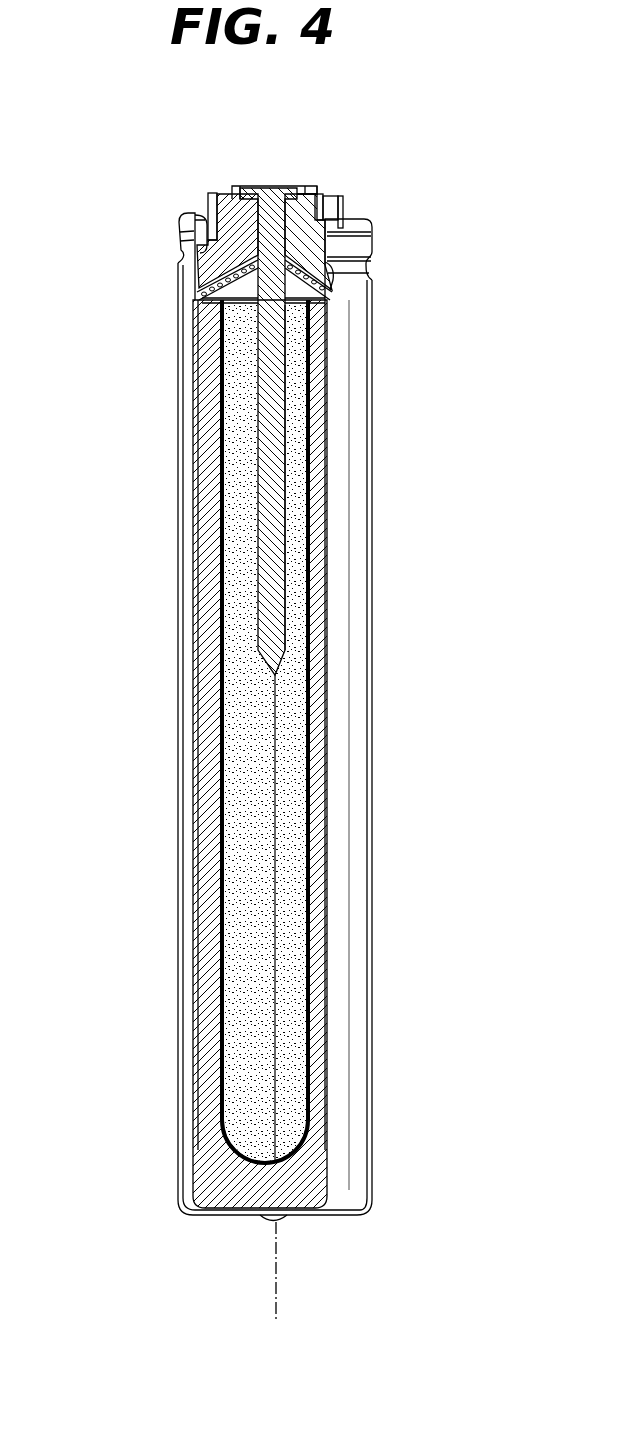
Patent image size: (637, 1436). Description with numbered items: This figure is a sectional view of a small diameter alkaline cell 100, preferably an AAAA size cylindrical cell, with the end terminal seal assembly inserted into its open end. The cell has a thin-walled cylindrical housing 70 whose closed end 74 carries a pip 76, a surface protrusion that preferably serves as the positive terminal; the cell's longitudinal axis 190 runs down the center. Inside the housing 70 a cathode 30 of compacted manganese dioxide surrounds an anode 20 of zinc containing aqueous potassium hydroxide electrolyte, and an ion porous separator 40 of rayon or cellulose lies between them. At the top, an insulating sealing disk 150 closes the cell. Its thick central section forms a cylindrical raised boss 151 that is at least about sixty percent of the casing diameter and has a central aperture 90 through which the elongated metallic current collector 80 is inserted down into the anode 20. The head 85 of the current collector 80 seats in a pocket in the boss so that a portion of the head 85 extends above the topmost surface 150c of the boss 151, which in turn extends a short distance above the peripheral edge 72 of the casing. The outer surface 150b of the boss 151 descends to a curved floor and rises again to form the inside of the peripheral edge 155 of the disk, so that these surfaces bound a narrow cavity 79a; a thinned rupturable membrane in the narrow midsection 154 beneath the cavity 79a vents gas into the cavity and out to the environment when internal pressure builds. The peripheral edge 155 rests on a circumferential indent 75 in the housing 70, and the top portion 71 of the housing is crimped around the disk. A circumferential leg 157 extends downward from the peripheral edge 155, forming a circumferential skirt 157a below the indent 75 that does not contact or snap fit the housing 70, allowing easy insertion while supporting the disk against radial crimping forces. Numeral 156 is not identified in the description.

The alkaline cell 100 is at (380, 644).
The cylindrical housing 70 is at (358, 393).
The closed end of housing 74 is at (212, 1215).
The pip 76 is at (285, 1220).
The longitudinal axis 190 is at (276, 1308).
The cavity 79a is at (197, 210).
The circumferential indent 75 is at (368, 268).
The peripheral edge of casing 72 is at (360, 219).
The top portion of cell housing 71 is at (368, 243).
The insulating sealing disk 150 is at (214, 190).
The head of current collector 85 is at (303, 188).
The raised boss 151 is at (205, 207).
The topmost surface of raised boss 150c is at (335, 190).
The outer surface of boss 150b is at (343, 207).
The current collector 80 is at (288, 448).
The peripheral edge of sealing disk 155 is at (205, 238).
The midsection region 154 is at (203, 247).
The seal layer 156 is at (203, 283).
The circumferential skirt 157a is at (210, 294).
The circumferential leg 157 is at (213, 300).
The cathode 30 is at (210, 565).
The anode 20 is at (242, 483).
The central aperture 90 is at (288, 545).
The separator 40 is at (217, 408).